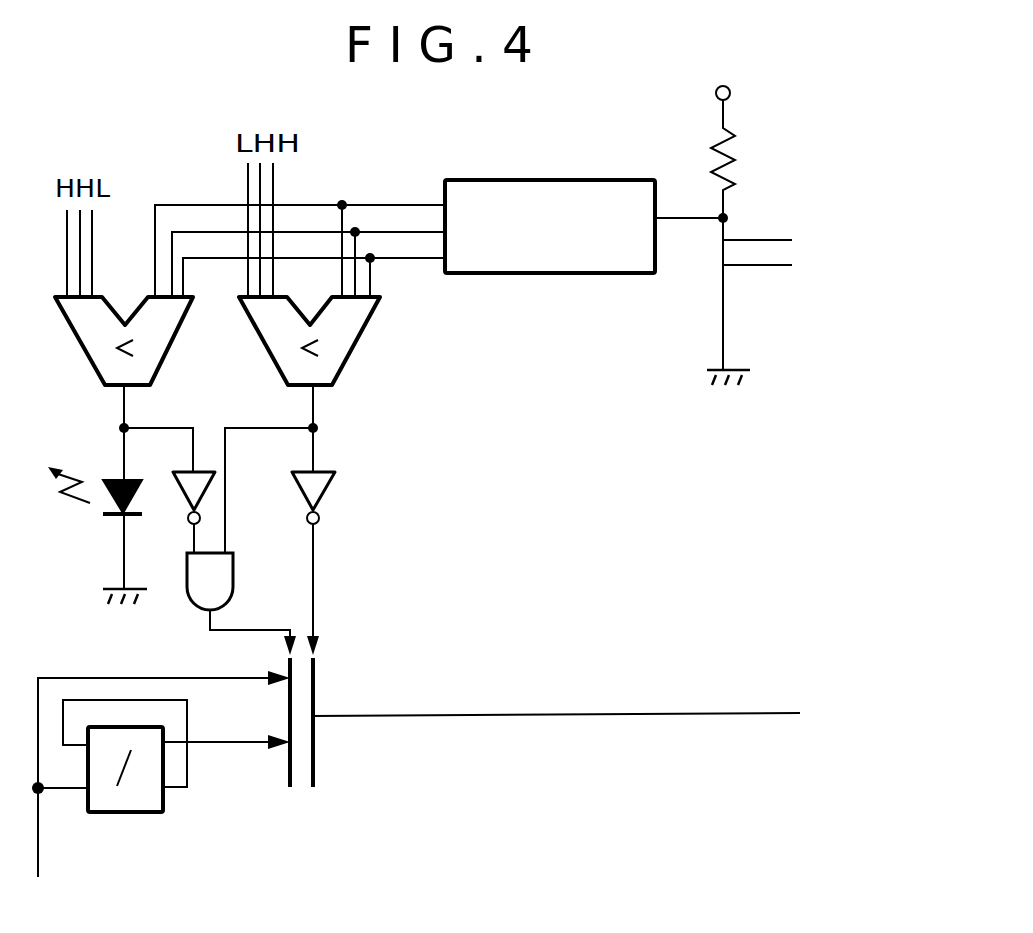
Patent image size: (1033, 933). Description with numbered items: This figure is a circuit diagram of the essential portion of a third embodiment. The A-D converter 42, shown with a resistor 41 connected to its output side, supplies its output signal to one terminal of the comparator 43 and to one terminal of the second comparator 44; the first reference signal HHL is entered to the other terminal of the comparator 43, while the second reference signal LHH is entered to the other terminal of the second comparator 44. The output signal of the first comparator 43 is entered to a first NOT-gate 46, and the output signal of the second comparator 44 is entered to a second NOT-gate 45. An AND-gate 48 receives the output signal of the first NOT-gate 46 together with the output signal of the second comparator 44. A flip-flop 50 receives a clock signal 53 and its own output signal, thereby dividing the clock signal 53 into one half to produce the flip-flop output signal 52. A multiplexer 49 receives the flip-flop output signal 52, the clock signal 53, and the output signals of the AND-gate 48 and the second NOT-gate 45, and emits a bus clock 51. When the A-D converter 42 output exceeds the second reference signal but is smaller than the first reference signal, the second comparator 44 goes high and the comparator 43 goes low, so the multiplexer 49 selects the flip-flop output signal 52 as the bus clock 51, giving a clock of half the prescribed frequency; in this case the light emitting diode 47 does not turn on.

The resistor 41 is at (735, 151).
The A-D converter 42 is at (572, 180).
The comparator 43 is at (172, 340).
The second comparator 44 is at (358, 340).
The second NOT-gate 45 is at (335, 486).
The first NOT-gate 46 is at (186, 490).
The light emitting diode 47 is at (112, 478).
The AND-gate 48 is at (233, 581).
The multiplexer 49 is at (316, 702).
The flip-flop 50 is at (115, 812).
The bus clock 51 is at (592, 713).
The flip-flop output signal 52 is at (218, 740).
The clock signal 53 is at (40, 845).